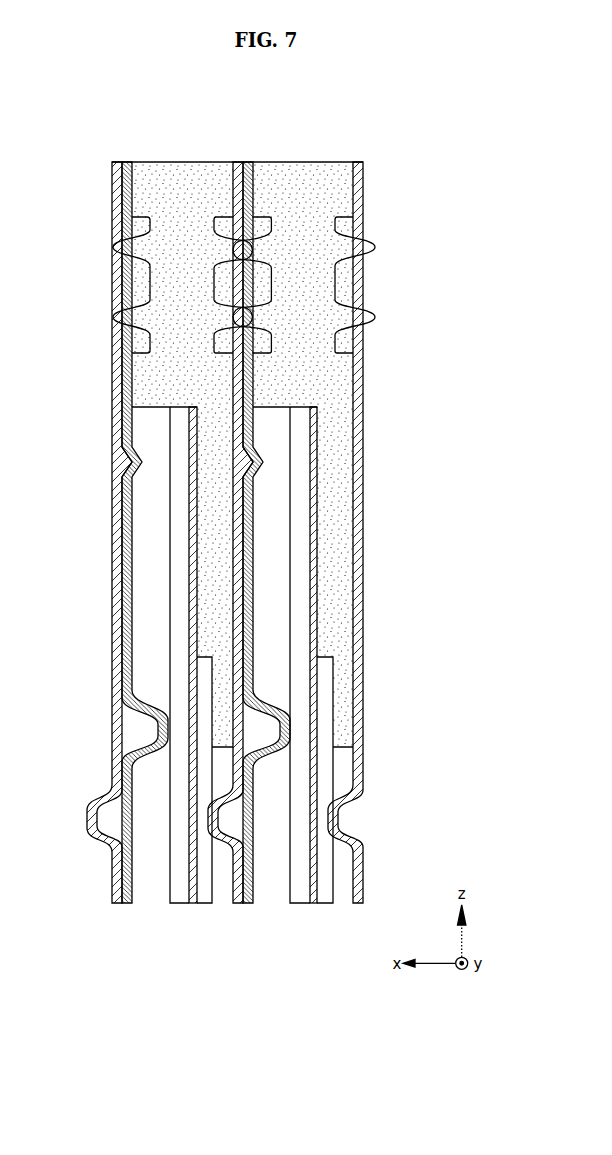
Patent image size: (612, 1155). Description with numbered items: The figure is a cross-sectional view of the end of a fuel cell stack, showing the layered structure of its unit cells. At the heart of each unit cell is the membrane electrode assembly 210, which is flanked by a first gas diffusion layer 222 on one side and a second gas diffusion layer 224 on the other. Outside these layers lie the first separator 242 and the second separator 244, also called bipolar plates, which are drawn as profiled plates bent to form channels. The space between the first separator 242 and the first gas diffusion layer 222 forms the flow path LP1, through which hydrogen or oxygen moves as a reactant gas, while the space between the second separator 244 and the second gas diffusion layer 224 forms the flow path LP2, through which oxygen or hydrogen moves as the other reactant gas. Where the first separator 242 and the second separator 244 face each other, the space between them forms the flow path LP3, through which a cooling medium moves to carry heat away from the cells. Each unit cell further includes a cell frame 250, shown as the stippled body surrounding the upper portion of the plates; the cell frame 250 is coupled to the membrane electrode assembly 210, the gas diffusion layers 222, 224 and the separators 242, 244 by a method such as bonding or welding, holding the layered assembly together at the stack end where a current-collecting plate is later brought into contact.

The cell frame 250 is at (183, 170).
The second separator 244 is at (99, 843).
The first separator 242 is at (129, 903).
The membrane electrode assembly 210 is at (193, 903).
The first gas diffusion layer 222 is at (178, 903).
The second gas diffusion layer 224 is at (205, 903).
The flow path LP1 is at (151, 674).
The flow path LP2 is at (223, 778).
The flow path LP3 is at (132, 740).